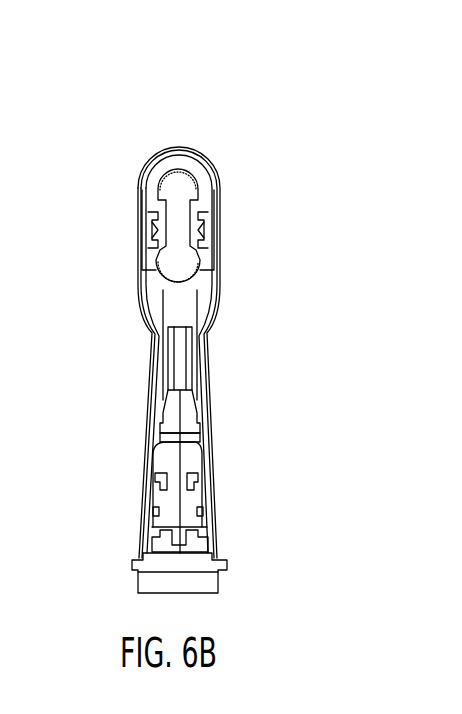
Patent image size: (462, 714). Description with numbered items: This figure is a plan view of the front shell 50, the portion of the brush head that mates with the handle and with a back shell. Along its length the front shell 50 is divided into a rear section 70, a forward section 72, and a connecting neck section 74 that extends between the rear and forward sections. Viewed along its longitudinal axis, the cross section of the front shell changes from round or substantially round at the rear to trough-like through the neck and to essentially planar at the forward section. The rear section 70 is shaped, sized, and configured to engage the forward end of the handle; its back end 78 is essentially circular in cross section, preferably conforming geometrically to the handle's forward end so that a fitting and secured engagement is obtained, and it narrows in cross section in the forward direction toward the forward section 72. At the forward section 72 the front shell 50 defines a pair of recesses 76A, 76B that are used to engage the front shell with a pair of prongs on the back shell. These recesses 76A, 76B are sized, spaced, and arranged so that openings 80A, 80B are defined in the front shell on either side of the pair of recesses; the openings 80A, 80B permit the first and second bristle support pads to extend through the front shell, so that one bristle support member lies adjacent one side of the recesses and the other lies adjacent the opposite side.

The front shell 50 is at (285, 158).
The rear section 70 is at (215, 523).
The forward section 72 is at (220, 253).
The connecting neck section 74 is at (197, 362).
The recess 76A is at (218, 192).
The recess 76B is at (163, 230).
The back end 78 is at (223, 562).
The opening 80A is at (166, 267).
The opening 80B is at (183, 187).